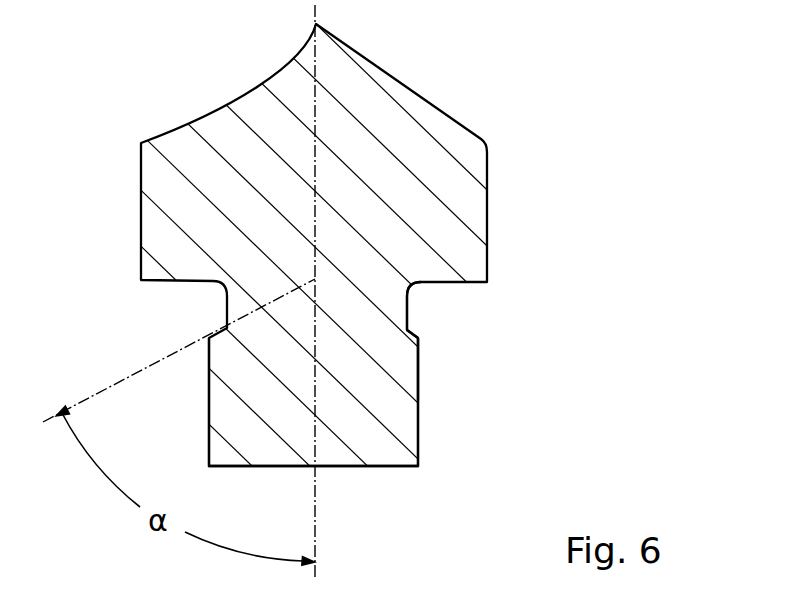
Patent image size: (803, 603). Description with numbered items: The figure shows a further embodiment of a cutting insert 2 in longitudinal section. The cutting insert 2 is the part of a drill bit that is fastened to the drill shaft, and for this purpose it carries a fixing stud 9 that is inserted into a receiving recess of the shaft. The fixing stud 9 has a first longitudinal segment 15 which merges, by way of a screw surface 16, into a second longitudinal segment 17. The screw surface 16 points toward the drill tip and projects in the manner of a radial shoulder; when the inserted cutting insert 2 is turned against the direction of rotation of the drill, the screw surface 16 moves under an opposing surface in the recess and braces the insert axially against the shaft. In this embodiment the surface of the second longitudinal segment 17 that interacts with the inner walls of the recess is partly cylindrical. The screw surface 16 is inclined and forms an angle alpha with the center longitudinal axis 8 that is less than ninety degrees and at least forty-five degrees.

The cutting insert 2 is at (416, 81).
The center longitudinal axis 8 is at (317, 523).
The fixing stud 9 is at (392, 408).
The first longitudinal segment 15 is at (405, 303).
The screw surface 16 is at (412, 328).
The second longitudinal segment 17 is at (420, 378).